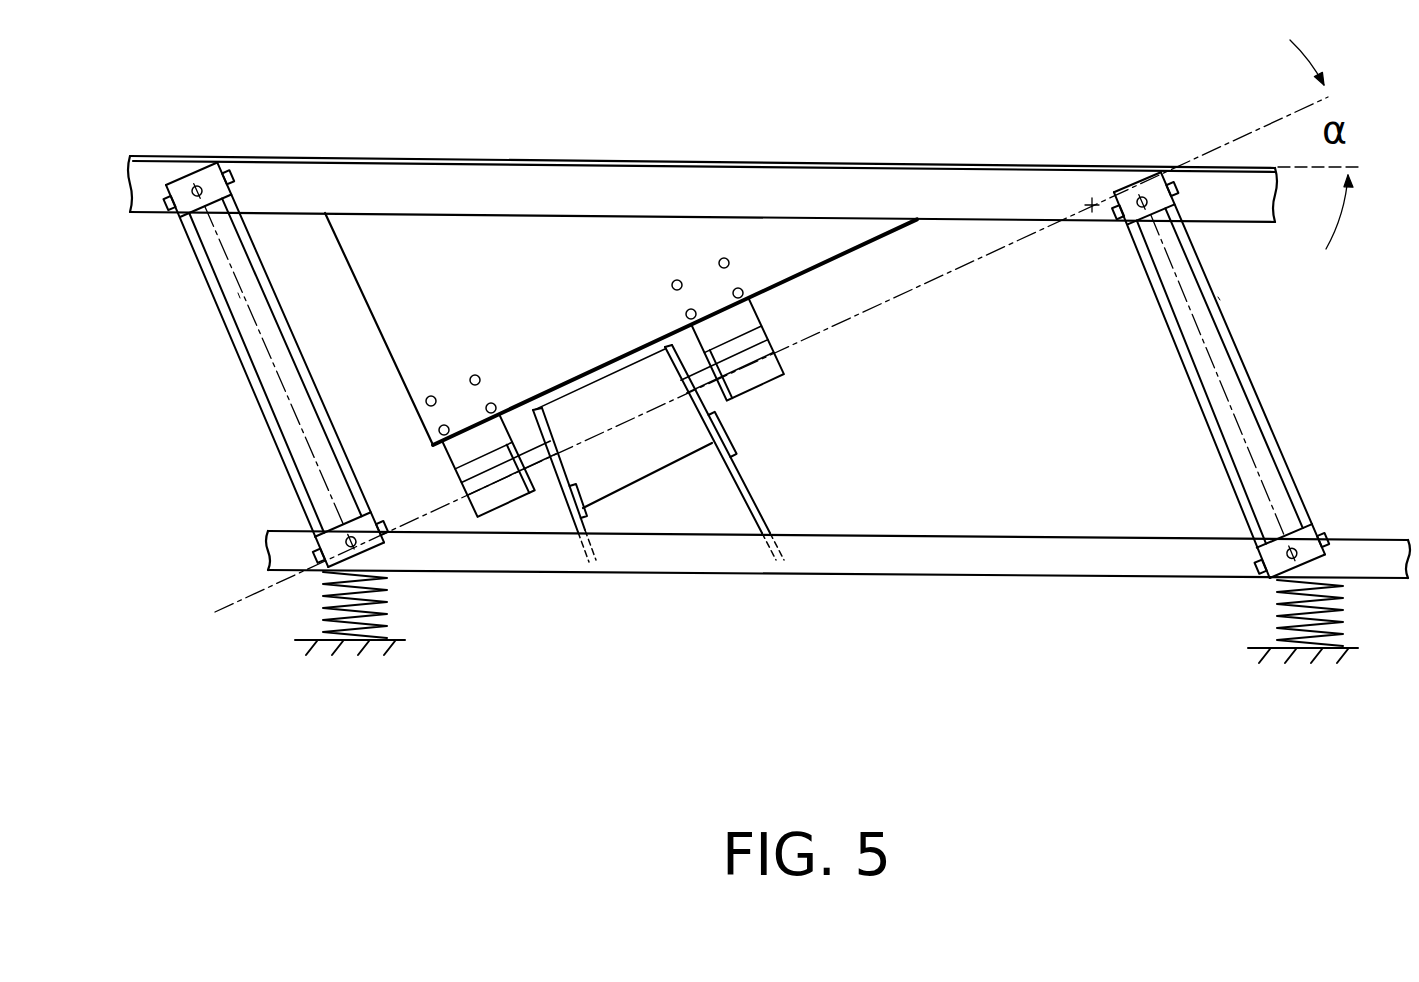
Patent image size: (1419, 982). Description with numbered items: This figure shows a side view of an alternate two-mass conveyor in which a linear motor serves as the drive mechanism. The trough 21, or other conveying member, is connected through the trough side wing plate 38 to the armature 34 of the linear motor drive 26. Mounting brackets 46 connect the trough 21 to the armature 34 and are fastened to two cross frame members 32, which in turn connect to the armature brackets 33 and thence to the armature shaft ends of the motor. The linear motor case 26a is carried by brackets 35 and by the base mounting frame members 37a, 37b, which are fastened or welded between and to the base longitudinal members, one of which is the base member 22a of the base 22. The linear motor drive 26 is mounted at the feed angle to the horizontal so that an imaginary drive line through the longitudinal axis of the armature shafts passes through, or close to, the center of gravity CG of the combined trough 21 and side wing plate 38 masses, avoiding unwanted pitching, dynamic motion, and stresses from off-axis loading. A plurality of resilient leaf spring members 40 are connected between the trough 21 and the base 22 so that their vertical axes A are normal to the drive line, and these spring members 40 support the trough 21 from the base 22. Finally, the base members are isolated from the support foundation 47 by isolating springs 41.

The trough 21 is at (258, 156).
The base 22 is at (937, 528).
The base longitudinal member 22a is at (844, 562).
The linear motor drive 26 is at (644, 334).
The linear motor case 26a is at (669, 450).
The cross frame members 32 is at (470, 483).
The armature brackets 33 is at (532, 478).
The armature 34 is at (526, 440).
The brackets 35 is at (550, 412).
The base mounting frame member 37a is at (750, 486).
The base mounting frame member 37b is at (585, 512).
The trough side wing plate 38 is at (521, 308).
The resilient leaf spring members 40 is at (244, 383).
The isolating springs 41 is at (388, 615).
The mounting brackets 46 is at (443, 452).
The support foundation 47 is at (313, 662).
The vertical axes of the spring members A is at (238, 293).
The center of gravity CG is at (1086, 194).